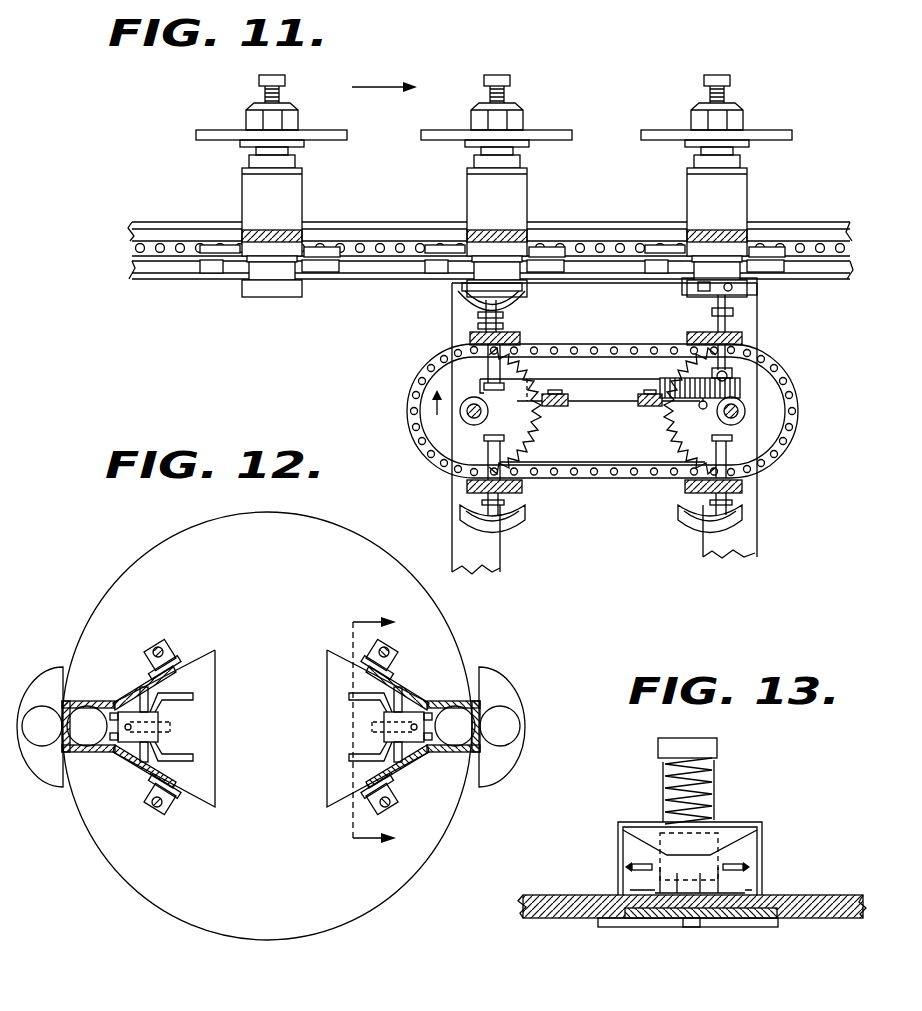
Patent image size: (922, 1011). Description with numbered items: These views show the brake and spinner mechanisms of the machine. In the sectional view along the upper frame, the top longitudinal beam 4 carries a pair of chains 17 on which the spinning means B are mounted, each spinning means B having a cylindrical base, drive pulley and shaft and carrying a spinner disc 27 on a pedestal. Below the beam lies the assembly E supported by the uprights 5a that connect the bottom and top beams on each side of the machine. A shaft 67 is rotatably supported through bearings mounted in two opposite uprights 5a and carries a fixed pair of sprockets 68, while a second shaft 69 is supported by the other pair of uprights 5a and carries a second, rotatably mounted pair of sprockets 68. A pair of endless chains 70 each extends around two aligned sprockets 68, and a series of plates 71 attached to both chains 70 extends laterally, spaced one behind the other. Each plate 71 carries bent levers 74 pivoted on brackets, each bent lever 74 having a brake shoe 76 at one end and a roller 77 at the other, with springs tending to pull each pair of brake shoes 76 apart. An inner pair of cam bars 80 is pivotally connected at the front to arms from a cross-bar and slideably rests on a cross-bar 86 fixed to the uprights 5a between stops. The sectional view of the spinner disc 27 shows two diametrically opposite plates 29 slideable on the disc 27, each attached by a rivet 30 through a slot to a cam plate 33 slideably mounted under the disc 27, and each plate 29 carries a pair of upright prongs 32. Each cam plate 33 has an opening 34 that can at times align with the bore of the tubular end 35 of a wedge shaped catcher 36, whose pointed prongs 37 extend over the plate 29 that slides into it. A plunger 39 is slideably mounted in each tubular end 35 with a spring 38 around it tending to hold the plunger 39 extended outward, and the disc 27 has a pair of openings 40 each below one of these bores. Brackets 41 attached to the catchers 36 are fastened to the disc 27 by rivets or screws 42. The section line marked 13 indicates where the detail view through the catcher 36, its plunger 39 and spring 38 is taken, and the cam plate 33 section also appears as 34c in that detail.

In FIG. 11, the longitudinal beam 4 is at (798, 236).
In FIG. 11, the chain 17 is at (362, 247).
In FIG. 11, the spinning means B is at (280, 198).
In FIG. 11, the drive unit E is at (609, 340).
In FIG. 11, the upright 5a is at (490, 562).
In FIG. 11, the brake shoe 76 is at (458, 300).
In FIG. 11, the plate 71 is at (470, 338).
In FIG. 11, the bent lever 74 is at (715, 305).
In FIG. 11, the sprocket 68 is at (443, 457).
In FIG. 11, the endless chain 70 is at (560, 479).
In FIG. 11, the shaft 67 is at (467, 423).
In FIG. 11, the second shaft 69 is at (743, 410).
In FIG. 11, the roller 77 is at (486, 388).
In FIG. 11, the inner cam bar 80 is at (593, 392).
In FIG. 11, the cross-bar 86 is at (556, 407).
In FIG. 12, the spinner disc 27 is at (232, 920).
In FIG. 13, the spinner disc 27 is at (548, 918).
In FIG. 12, the cam plate 33 is at (53, 775).
In FIG. 13, the cam plate 33 is at (670, 918).
In FIG. 12, the opening 34 is at (42, 720).
In FIG. 13, the retaining plate 34c is at (815, 959).
In FIG. 12, the tubular end 35 is at (75, 705).
In FIG. 12, the opening 40 is at (90, 745).
In FIG. 12, the catcher 36 is at (140, 690).
In FIG. 13, the catcher 36 is at (763, 843).
In FIG. 12, the plate 29 is at (215, 705).
In FIG. 13, the plate 29 is at (640, 890).
In FIG. 12, the rivet 42 is at (166, 650).
In FIG. 12, the bracket 41 is at (172, 666).
In FIG. 12, the pointed prong 37 is at (192, 700).
In FIG. 13, the pointed prong 37 is at (632, 866).
In FIG. 12, the upright prong 32 is at (271, 715).
In FIG. 13, the upright prong 32 is at (712, 888).
In FIG. 12, the rivet 30 is at (132, 763).
In FIG. 13, the rivet 30 is at (687, 923).
In FIG. 12, the section line 13 is at (364, 736).
In FIG. 13, the spring 38 is at (712, 782).
In FIG. 13, the plunger 39 is at (718, 746).